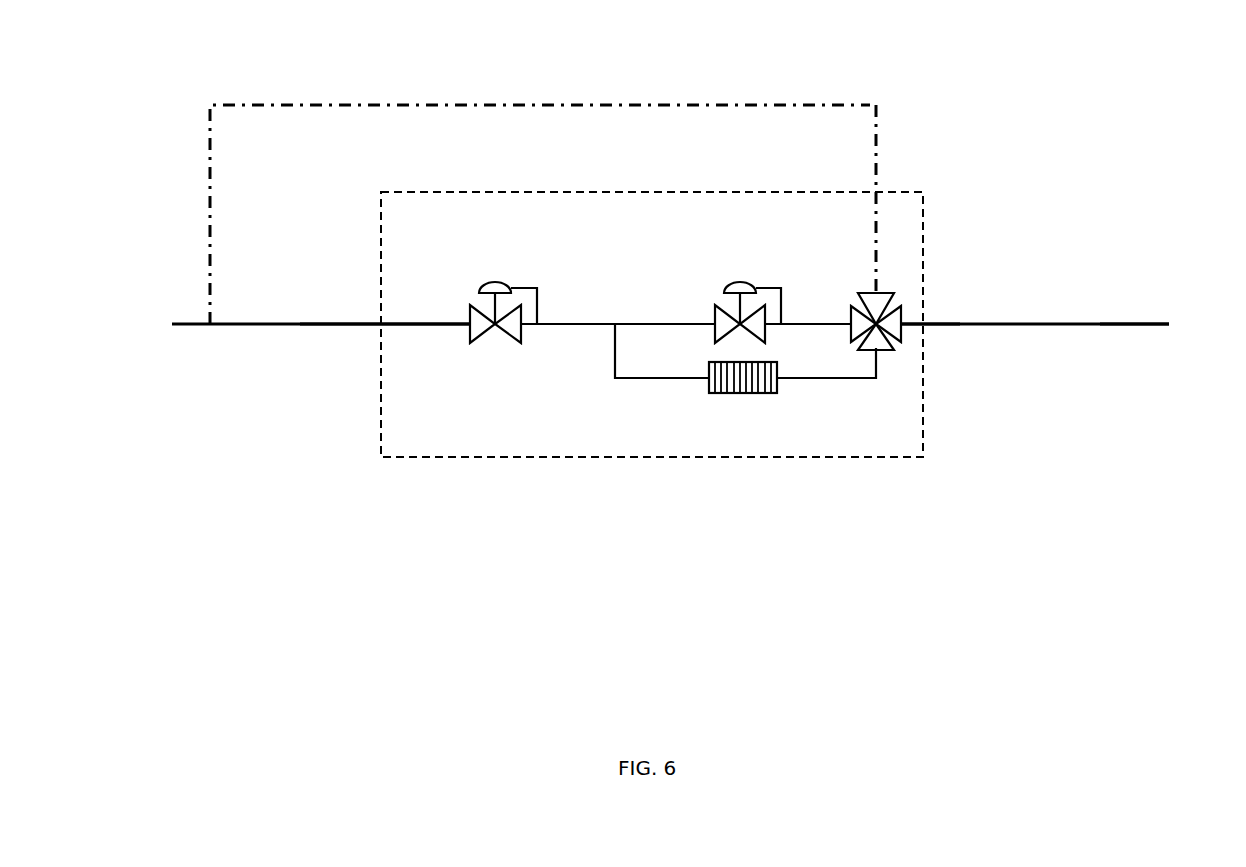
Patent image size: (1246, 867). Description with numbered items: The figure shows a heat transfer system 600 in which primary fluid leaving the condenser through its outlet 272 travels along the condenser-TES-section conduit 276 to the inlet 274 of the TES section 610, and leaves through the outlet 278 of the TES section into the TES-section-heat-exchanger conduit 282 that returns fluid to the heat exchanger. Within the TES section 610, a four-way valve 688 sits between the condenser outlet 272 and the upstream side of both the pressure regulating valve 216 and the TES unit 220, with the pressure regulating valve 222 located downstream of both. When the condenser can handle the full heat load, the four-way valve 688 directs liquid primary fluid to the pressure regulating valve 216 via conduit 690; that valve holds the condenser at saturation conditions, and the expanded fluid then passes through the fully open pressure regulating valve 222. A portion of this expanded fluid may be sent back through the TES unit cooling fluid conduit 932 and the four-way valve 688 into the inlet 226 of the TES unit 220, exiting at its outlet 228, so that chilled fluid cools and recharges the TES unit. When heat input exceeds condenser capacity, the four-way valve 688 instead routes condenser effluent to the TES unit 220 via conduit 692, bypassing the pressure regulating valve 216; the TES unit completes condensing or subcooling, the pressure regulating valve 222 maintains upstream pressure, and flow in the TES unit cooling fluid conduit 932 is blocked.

The heat transfer system 600 is at (1157, 72).
The TES unit cooling fluid conduit 932 is at (881, 153).
The TES section 610 is at (416, 461).
The TES-section-heat-exchanger conduit 282 is at (205, 331).
The outlet 278 is at (369, 330).
The pressure regulating valve 222 is at (453, 296).
The conduit 690 is at (694, 316).
The pressure regulating valve 216 is at (745, 270).
The outlet 228 is at (702, 398).
The TES unit 220 is at (745, 404).
The inlet 226 is at (785, 398).
The conduit 692 is at (844, 381).
The four-way valve 688 is at (894, 365).
The condenser-TES-section conduit 276 is at (992, 321).
The inlet 274 is at (931, 329).
The outlet 272 is at (1146, 330).